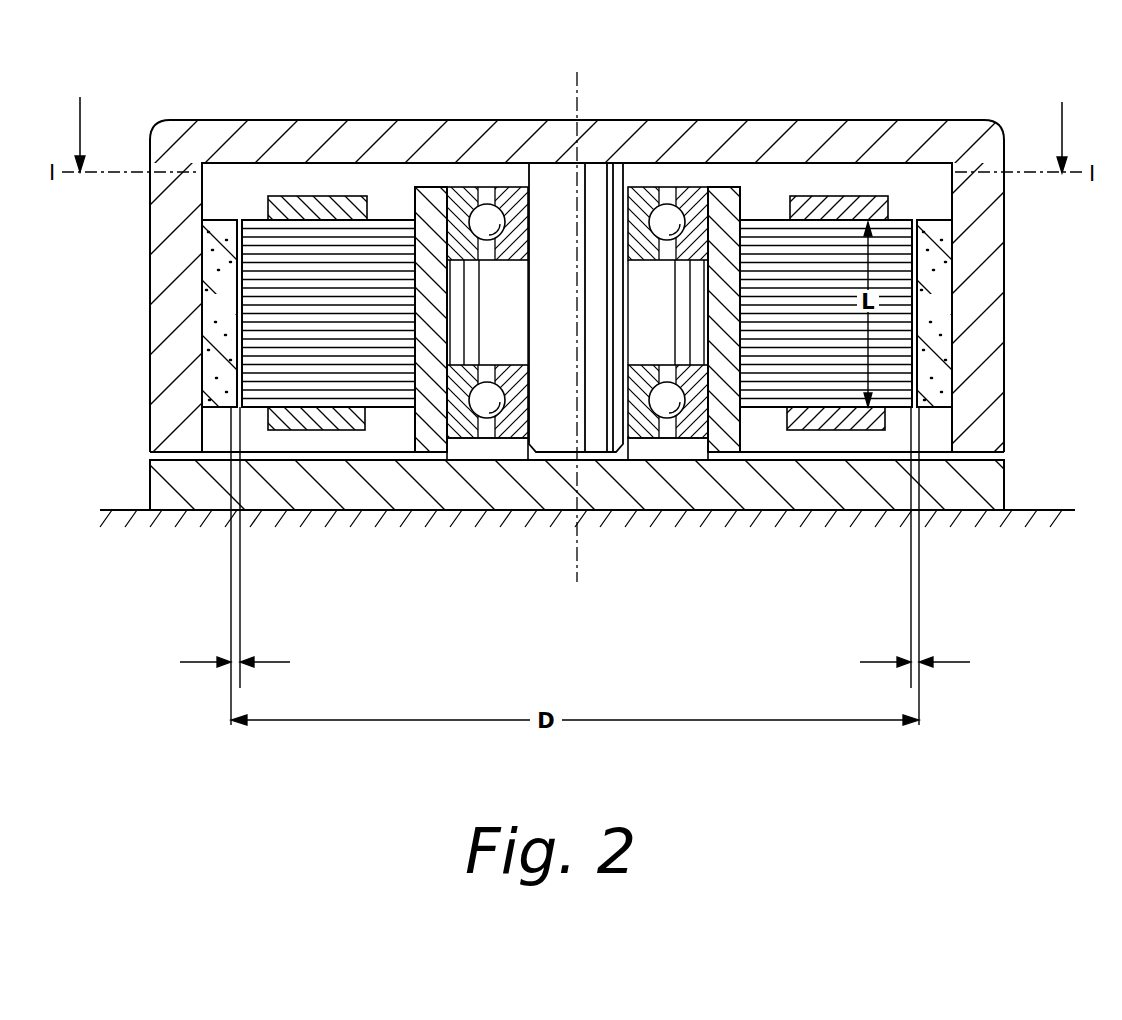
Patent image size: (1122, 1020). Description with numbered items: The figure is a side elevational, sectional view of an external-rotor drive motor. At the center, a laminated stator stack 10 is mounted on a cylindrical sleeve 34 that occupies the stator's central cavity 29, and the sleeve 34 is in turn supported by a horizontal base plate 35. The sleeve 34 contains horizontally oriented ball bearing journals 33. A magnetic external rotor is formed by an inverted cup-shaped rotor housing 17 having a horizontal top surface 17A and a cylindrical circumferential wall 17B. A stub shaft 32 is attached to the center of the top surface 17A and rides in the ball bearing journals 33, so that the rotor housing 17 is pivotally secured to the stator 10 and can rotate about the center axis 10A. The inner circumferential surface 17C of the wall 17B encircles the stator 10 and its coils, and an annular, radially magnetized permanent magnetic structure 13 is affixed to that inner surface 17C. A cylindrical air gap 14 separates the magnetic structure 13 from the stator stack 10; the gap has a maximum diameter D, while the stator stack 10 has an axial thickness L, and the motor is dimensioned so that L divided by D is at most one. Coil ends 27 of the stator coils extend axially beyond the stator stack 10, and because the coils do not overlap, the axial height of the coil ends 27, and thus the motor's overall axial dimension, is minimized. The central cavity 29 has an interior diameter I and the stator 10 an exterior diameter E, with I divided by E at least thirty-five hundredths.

The stator 10 is at (768, 196).
The center axis 10A is at (577, 90).
The permanent magnetic structure 13 is at (918, 210).
The air gap 14 is at (241, 688).
The rotor housing 17 is at (571, 232).
The top surface 17A is at (523, 132).
The circumferential wall 17B is at (157, 317).
The inner circumferential surface 17C is at (204, 186).
The coil ends 27 is at (328, 198).
The central cavity 29 is at (722, 212).
The stub shaft 32 is at (536, 318).
The ball bearing journals 33 is at (478, 190).
The cylindrical sleeve 34 is at (428, 462).
The base plate 35 is at (280, 512).